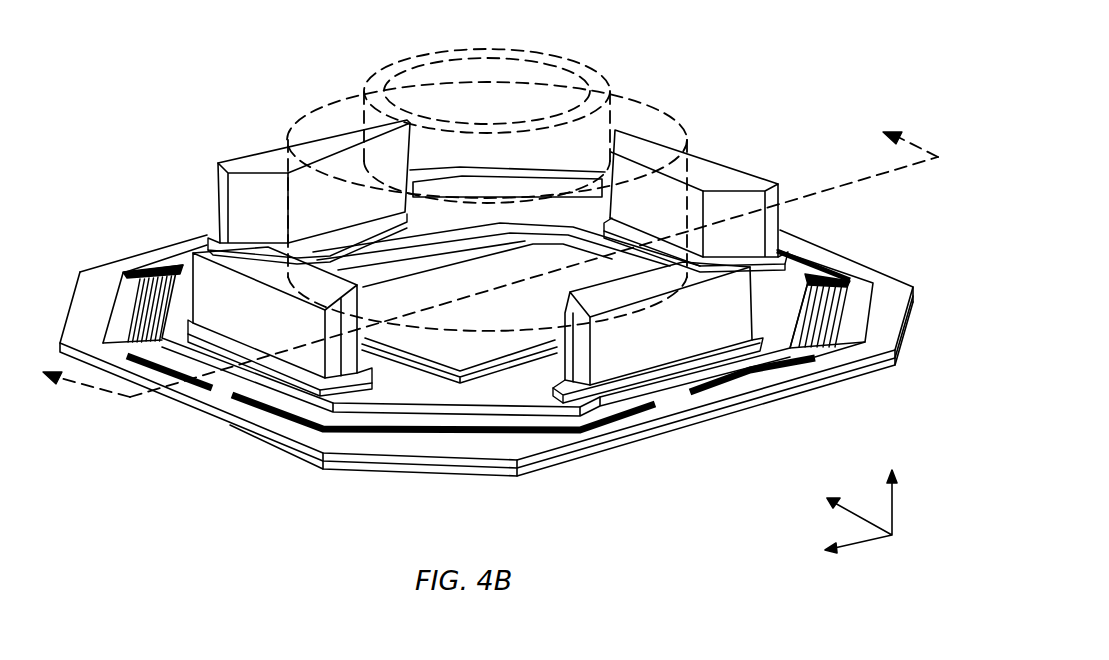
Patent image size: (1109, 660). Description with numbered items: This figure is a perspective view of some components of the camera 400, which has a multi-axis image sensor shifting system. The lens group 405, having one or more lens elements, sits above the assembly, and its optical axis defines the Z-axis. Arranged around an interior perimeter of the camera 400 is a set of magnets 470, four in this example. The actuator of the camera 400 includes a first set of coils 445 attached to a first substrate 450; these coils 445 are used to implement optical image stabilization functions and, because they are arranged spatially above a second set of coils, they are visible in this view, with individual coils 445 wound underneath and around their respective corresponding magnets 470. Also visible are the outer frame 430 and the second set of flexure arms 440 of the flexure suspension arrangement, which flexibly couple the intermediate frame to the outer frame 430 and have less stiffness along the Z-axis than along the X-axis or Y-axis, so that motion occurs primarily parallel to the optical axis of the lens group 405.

The camera 400 is at (641, 57).
The lens group 405 is at (437, 63).
The outer frame 430 is at (585, 452).
The second set of flexure arms 440 is at (253, 410).
The first set of coils 445 is at (357, 393).
The first substrate 450 is at (443, 400).
The magnets 470 is at (767, 151).